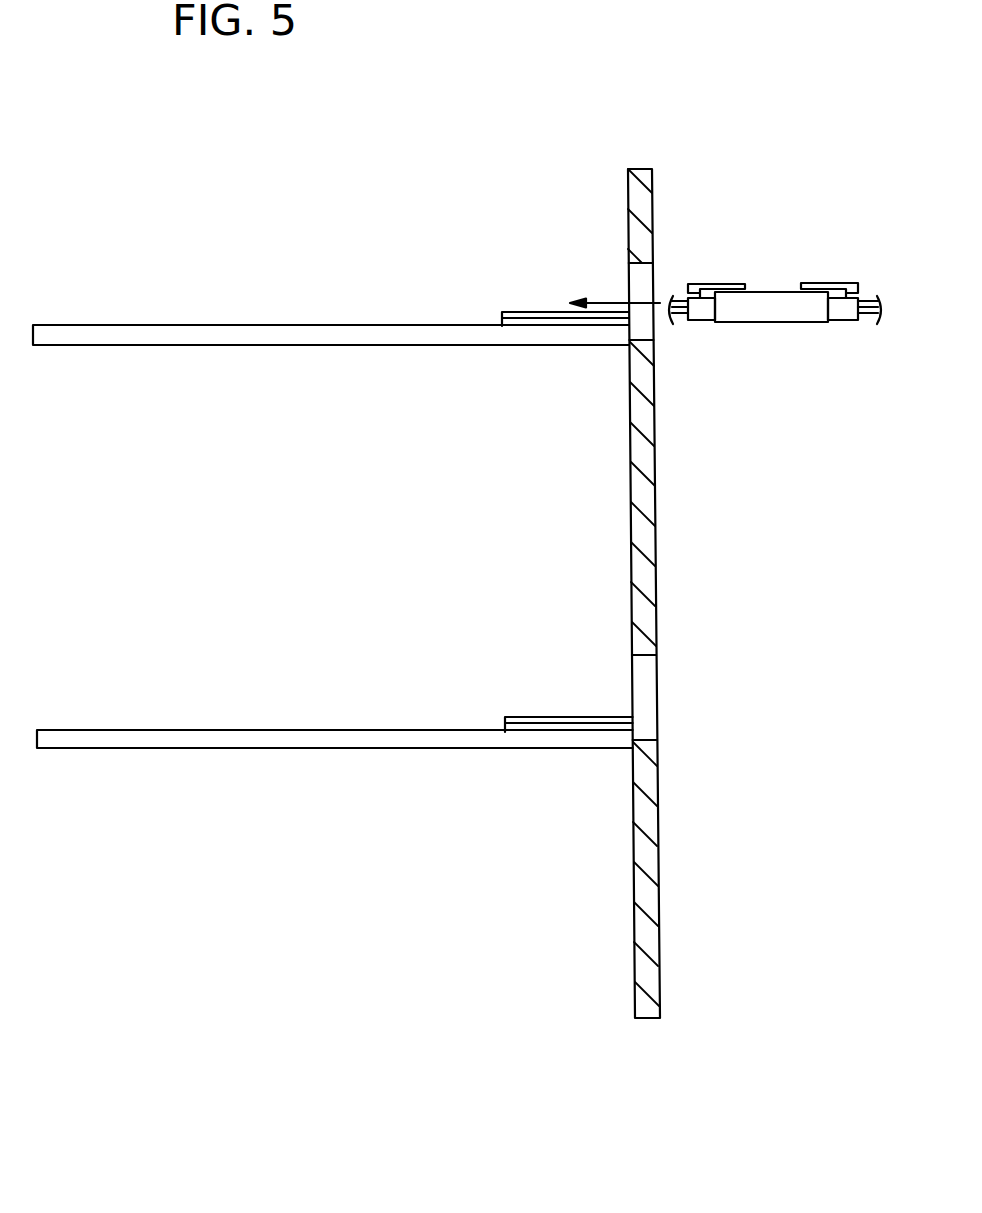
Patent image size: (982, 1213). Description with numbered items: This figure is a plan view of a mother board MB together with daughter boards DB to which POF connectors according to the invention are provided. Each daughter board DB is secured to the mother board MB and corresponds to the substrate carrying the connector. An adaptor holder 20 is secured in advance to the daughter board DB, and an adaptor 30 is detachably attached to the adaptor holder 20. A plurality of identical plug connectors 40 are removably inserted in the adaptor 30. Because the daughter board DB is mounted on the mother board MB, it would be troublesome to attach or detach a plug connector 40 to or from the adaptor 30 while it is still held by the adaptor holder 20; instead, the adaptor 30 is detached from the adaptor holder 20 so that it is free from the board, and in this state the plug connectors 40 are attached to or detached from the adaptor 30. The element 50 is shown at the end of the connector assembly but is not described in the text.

The mother board MB is at (645, 631).
The daughter board DB is at (266, 334).
The adaptor holder 20 is at (517, 316).
The adaptor 30 is at (763, 298).
The plug connector 40 is at (705, 307).
The contact pins 50 is at (870, 298).